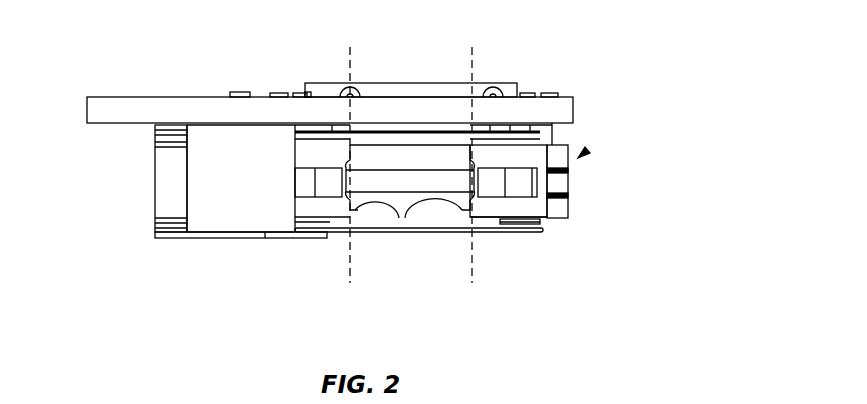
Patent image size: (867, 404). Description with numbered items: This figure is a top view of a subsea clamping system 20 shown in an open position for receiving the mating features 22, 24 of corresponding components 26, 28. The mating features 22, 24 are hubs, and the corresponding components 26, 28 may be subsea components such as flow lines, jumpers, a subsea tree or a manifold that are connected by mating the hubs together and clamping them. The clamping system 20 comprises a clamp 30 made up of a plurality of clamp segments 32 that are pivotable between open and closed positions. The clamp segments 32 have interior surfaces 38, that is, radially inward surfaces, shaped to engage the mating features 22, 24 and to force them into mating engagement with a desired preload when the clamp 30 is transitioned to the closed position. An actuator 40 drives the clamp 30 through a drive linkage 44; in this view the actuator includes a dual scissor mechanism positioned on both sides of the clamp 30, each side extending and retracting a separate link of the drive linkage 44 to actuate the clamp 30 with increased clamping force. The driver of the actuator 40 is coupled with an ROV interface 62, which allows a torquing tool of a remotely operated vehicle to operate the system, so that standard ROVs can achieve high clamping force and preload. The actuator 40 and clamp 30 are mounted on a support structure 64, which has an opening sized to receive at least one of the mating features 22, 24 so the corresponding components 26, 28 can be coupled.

The clamping system 20 is at (582, 73).
The mating feature 22 is at (432, 205).
The mating feature 24 is at (420, 157).
The corresponding component 26 is at (350, 283).
The corresponding component 28 is at (350, 60).
The clamp 30 is at (582, 155).
The clamp segments 32 is at (308, 207).
The interior surfaces 38 is at (425, 192).
The actuator 40 is at (172, 248).
The drive linkage 44 is at (402, 135).
The ROV interface 62 is at (183, 183).
The support structure 64 is at (128, 97).